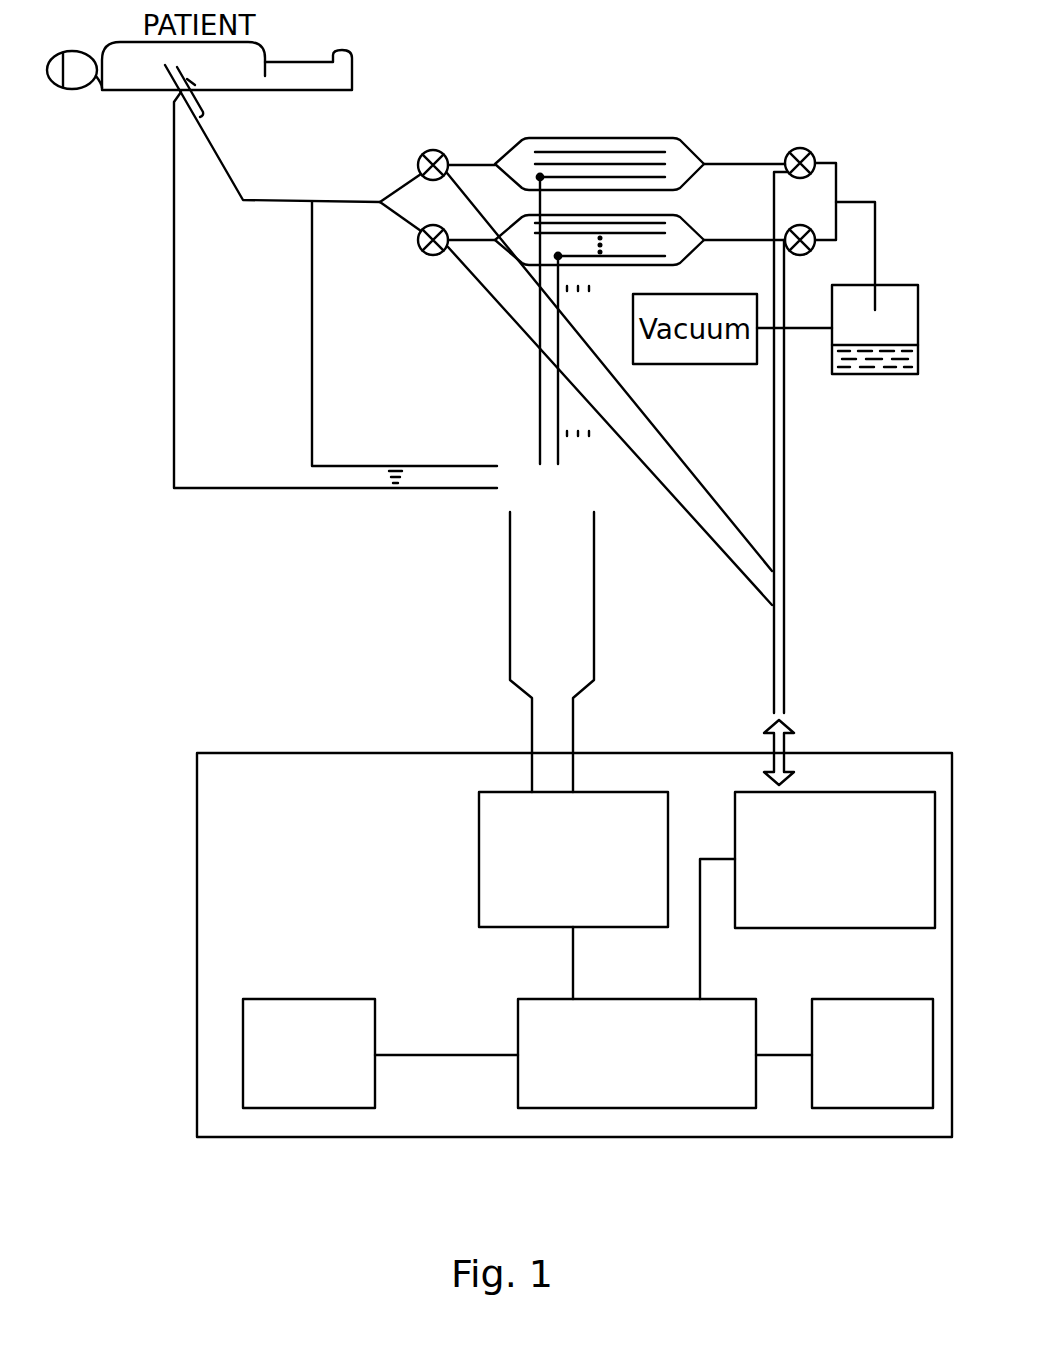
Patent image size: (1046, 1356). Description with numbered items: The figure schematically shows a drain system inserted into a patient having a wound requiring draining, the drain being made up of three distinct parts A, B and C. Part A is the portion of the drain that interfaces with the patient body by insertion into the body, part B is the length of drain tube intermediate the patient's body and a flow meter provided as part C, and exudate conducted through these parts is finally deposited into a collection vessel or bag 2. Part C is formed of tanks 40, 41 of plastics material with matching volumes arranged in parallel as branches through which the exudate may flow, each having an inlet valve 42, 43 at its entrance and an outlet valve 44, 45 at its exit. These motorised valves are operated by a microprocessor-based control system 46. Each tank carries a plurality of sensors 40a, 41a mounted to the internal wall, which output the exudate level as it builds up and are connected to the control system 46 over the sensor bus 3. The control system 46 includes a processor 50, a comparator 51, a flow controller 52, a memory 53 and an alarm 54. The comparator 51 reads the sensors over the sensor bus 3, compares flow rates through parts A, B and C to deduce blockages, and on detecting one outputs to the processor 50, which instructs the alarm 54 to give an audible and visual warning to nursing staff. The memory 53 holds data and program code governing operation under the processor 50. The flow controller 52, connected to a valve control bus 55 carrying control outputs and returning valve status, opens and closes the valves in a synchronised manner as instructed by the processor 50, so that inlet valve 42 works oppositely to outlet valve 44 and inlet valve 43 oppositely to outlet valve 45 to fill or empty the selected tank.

The collection vessel or bag 2 is at (890, 297).
The sensor bus 3 is at (592, 552).
The tank 40 is at (620, 147).
The sensors 40a is at (585, 148).
The tank 41 is at (620, 241).
The sensors 41a is at (669, 256).
The inlet valve 42 is at (448, 154).
The inlet valve 43 is at (422, 251).
The outlet valve 44 is at (812, 151).
The outlet valve 45 is at (812, 252).
The control system 46 is at (384, 832).
The processor 50 is at (619, 1088).
The comparator 51 is at (555, 892).
The flow controller 52 is at (817, 910).
The memory 53 is at (854, 1088).
The alarm 54 is at (291, 1088).
The valve control bus 55 is at (786, 657).
The part A is at (272, 131).
The part B is at (353, 185).
The part C is at (820, 122).